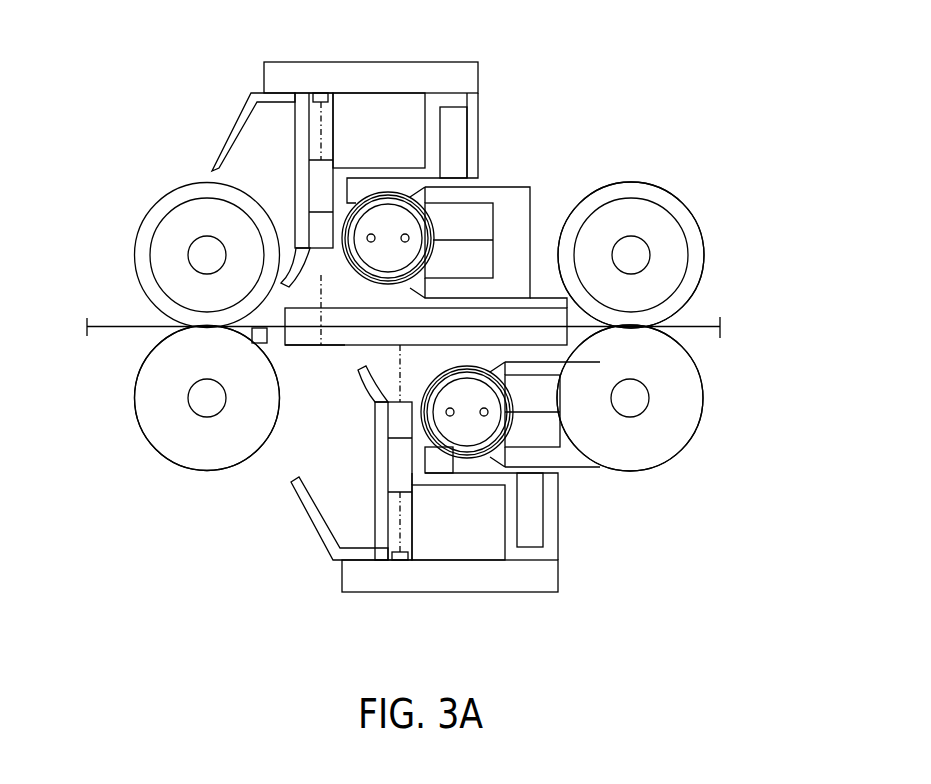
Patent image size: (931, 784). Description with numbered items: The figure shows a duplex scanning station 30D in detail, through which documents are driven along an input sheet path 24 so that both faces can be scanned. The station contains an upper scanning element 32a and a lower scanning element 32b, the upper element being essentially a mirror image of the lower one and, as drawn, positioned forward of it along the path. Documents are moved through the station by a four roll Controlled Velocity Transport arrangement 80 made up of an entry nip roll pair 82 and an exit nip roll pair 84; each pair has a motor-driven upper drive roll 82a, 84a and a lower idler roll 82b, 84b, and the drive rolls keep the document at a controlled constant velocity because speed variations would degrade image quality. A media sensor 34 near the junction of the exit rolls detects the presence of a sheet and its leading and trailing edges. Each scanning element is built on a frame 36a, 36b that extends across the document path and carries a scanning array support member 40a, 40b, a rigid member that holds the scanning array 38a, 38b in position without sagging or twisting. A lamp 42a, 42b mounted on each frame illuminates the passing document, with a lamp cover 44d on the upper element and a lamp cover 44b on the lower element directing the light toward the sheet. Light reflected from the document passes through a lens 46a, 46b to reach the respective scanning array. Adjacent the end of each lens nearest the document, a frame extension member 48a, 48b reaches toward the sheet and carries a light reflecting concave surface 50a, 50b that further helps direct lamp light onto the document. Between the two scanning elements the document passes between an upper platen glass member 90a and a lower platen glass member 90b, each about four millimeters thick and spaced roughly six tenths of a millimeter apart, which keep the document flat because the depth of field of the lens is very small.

The input sheet path 24 is at (705, 305).
The duplex scanning station 30D is at (608, 72).
The upper scanning element 32a is at (521, 160).
The lower scanning element 32b is at (591, 572).
The media sensor 34 is at (268, 343).
The frame 36a is at (496, 122).
The frame 36b is at (591, 518).
The scanning array 38a is at (331, 100).
The scanning array 38b is at (410, 556).
The scanning array support member 40a is at (403, 62).
The scanning array support member 40b is at (448, 594).
The lamp 42a is at (431, 280).
The lamp 42b is at (426, 326).
The lamp cover 44b is at (425, 393).
The lamp cover 44d is at (349, 266).
The lens 46a is at (336, 166).
The lens 46b is at (404, 496).
The frame extension member 48a is at (292, 240).
The frame extension member 48b is at (367, 393).
The light reflecting concave surface 50a is at (338, 310).
The light reflecting concave surface 50b is at (385, 373).
The Controlled Velocity Transport arrangement 80 is at (681, 190).
The nip roll pair 82 is at (703, 358).
The upper drive roll 82a is at (705, 235).
The lower idler roll 82b is at (694, 434).
The nip roll pair 84 is at (140, 338).
The upper drive roll 84a is at (151, 208).
The lower idler roll 84b is at (144, 434).
The platen glass member 90a is at (547, 307).
The platen glass member 90b is at (334, 346).